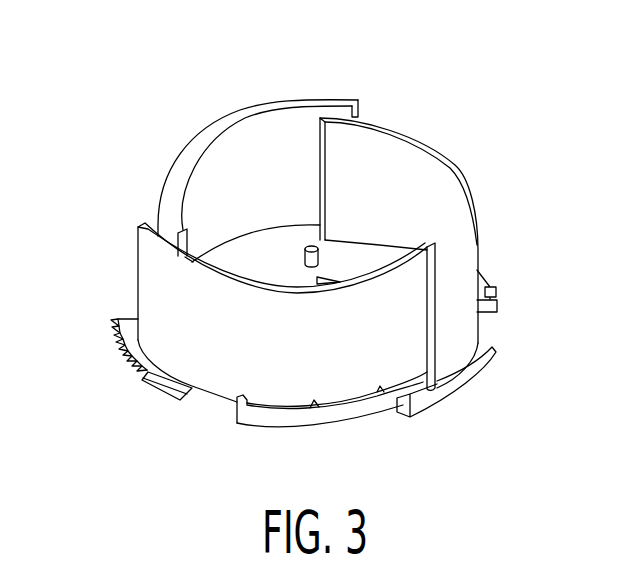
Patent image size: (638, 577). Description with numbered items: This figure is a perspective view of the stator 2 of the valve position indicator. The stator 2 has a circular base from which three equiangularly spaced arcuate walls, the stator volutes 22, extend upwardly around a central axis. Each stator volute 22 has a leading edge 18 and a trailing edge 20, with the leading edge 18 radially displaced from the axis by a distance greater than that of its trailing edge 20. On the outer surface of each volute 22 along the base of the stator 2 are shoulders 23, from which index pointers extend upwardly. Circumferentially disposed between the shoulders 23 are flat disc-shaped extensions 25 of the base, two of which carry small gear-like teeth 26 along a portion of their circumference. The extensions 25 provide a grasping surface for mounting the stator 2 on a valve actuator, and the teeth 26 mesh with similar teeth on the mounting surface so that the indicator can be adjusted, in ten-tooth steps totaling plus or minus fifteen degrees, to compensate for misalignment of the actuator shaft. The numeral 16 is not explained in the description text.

The stator 2 is at (440, 100).
The wall segment 16 is at (257, 107).
The leading edge 18 is at (432, 300).
The trailing edge 20 is at (322, 168).
The stator volute 22 is at (172, 150).
The shoulder 23 is at (366, 415).
The extension 25 is at (162, 392).
The teeth 26 is at (117, 345).